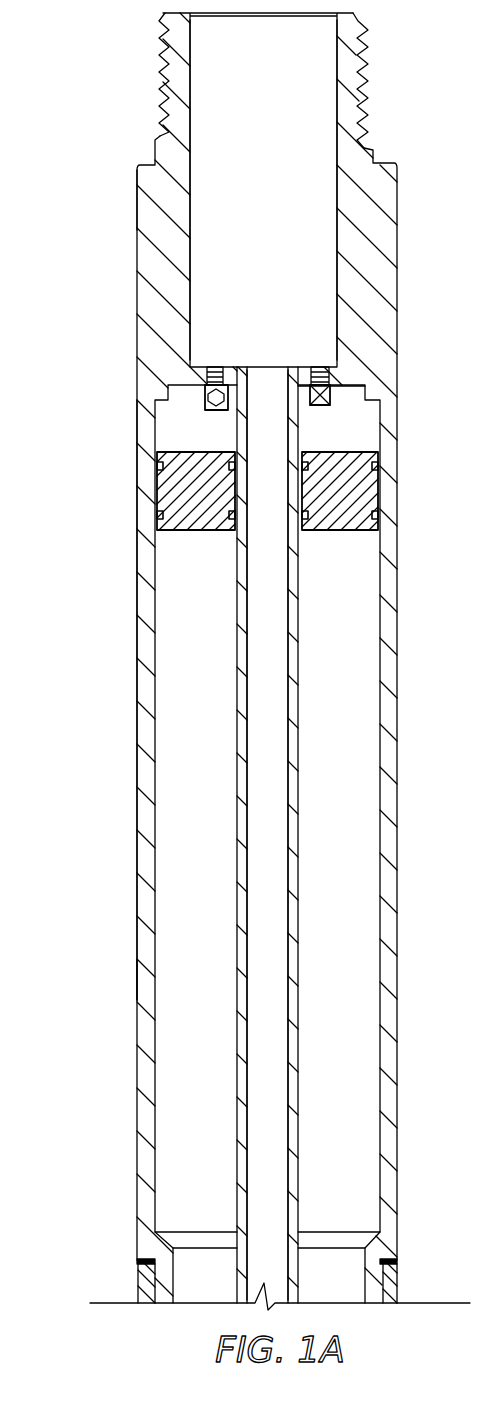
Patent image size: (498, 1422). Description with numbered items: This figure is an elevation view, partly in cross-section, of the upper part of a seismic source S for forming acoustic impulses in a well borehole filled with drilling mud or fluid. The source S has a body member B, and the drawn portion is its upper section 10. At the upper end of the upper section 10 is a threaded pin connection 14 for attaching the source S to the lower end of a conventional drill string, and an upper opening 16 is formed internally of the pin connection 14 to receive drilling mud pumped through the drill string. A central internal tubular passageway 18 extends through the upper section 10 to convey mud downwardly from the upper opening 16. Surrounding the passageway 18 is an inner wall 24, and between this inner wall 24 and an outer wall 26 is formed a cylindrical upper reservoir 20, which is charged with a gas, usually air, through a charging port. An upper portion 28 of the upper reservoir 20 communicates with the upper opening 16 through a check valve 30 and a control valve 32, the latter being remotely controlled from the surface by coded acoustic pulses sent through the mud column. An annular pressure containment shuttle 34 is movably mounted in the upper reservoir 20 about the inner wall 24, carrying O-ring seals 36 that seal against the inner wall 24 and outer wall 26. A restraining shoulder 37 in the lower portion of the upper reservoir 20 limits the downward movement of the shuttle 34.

The upper section 10 is at (115, 661).
The threaded pin connection 14 is at (362, 58).
The upper opening 16 is at (250, 110).
The central internal tubular passageway 18 is at (254, 638).
The upper reservoir 20 is at (326, 635).
The inner wall 24 is at (293, 770).
The outer wall 26 is at (390, 683).
The upper portion 28 is at (318, 442).
The check valve 30 is at (208, 407).
The control valve 32 is at (322, 405).
The annular pressure containment shuttle 34 is at (355, 492).
The seals 36 is at (157, 466).
The restraining shoulder 37 is at (367, 1238).
The seismic source S is at (110, 212).
The body member B is at (120, 983).